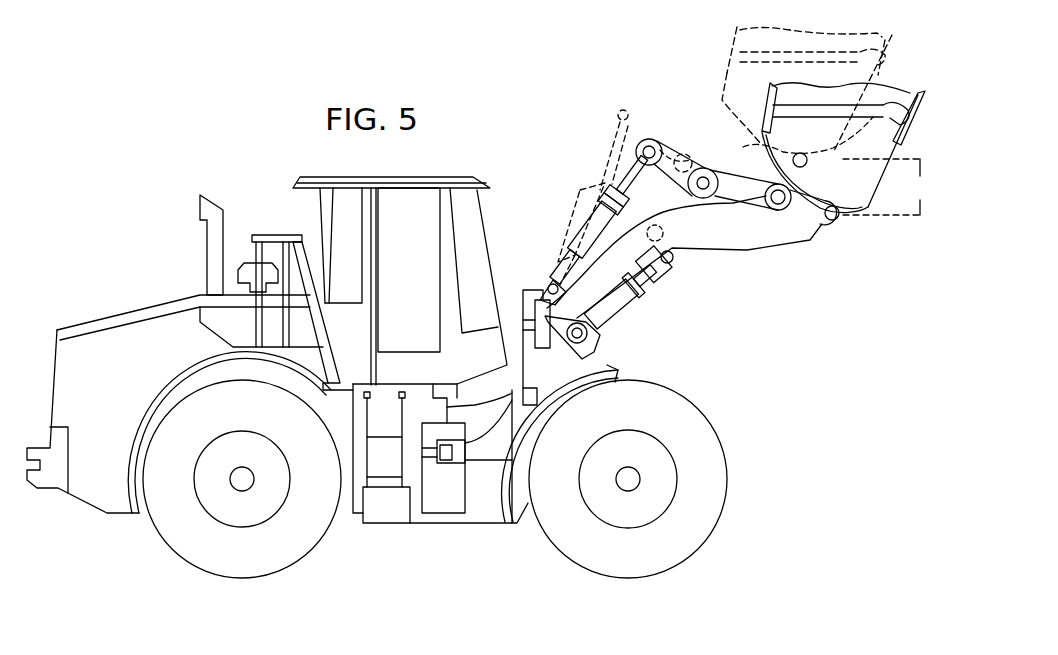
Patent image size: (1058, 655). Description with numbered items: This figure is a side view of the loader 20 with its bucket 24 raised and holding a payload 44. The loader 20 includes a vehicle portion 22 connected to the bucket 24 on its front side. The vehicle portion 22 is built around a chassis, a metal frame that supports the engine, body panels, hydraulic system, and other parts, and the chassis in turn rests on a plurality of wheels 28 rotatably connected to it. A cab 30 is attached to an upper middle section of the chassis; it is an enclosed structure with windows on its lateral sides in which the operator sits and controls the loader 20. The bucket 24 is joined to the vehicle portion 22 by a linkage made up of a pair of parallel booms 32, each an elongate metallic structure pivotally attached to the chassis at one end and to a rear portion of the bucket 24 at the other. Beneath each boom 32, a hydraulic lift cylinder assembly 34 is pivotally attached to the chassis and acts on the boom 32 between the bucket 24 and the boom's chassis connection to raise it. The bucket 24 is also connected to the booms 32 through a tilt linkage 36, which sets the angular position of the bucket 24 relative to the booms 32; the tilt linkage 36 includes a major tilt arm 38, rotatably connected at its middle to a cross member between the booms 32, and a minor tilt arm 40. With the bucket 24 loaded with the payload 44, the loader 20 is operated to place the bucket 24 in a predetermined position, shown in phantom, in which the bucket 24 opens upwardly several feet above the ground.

The wheel loader machine 20 is at (474, 155).
The rear body / engine compartment 22 is at (146, 287).
The bucket 24 is at (834, 193).
The wheels 28 is at (324, 486).
The operator cab 30 is at (417, 235).
The lift arm 32 is at (715, 244).
The lift cylinder 34 is at (620, 303).
The tilt cylinder 36 is at (634, 131).
The tilt lever 38 is at (663, 136).
The link pivot pin 40 is at (773, 210).
The bucket in raised position 44 is at (895, 88).